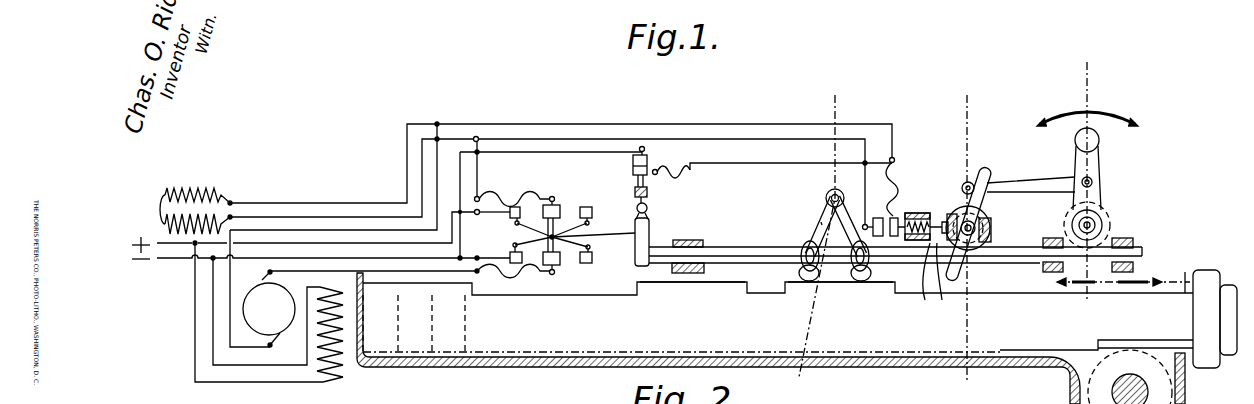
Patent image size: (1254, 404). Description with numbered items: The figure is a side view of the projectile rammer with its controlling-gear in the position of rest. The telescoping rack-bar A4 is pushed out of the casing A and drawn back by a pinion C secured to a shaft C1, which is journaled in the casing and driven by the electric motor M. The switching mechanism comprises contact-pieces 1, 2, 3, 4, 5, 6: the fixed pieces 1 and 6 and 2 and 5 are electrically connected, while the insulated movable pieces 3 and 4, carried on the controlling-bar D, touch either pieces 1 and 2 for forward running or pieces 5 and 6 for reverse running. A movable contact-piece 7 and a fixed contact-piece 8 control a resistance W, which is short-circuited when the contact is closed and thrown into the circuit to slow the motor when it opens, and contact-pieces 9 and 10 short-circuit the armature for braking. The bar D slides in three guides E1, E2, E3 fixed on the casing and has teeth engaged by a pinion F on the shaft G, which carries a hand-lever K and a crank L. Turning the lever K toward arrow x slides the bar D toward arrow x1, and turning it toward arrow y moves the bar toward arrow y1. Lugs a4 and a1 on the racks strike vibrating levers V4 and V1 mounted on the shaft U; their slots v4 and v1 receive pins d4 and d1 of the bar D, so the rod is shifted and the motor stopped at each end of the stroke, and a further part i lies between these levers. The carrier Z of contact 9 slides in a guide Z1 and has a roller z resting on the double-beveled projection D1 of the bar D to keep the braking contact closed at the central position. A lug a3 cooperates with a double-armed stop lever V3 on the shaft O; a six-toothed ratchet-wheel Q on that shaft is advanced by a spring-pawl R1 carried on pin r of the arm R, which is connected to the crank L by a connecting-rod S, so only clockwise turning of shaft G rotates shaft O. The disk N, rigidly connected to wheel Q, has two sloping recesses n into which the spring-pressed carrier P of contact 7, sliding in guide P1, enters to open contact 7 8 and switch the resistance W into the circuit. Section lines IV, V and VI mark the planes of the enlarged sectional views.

The resistance W is at (203, 187).
The electric motor M is at (269, 308).
The contact-piece 1 is at (509, 216).
The contact-piece 2 is at (509, 255).
The contact-piece 3 is at (556, 210).
The contact-piece 4 is at (556, 266).
The contact-piece 5 is at (590, 210).
The contact-piece 6 is at (590, 264).
The movable contact-piece 7 is at (897, 217).
The fixed contact-piece 8 is at (880, 217).
The movable contact-piece 9 is at (633, 172).
The contact-piece 10 is at (633, 161).
The roller z is at (636, 209).
The carrier Z is at (662, 167).
The guide Z1 is at (648, 192).
The projection D1 is at (650, 238).
The controlling-bar D is at (732, 255).
The guide E1 is at (694, 240).
The guide E2 is at (1046, 237).
The guide E3 is at (1135, 241).
The shaft U is at (826, 198).
The vibrating lever V1 is at (812, 225).
The vibrating lever V4 is at (850, 212).
The link i is at (821, 230).
The slot v1 is at (800, 270).
The slot v4 is at (871, 272).
The pin d1 is at (813, 283).
The pin d4 is at (860, 283).
The lug a1 is at (788, 294).
The lug a3 is at (672, 293).
The lug a4 is at (381, 294).
The casing A is at (500, 367).
The rack-bar A4 is at (866, 367).
The recess n is at (950, 212).
The shaft O is at (980, 250).
The shifting ratchet-wheel Q is at (984, 247).
The stop lever V3 is at (983, 170).
The pin r is at (967, 181).
The arm R is at (962, 190).
The spring-pawl R1 is at (987, 217).
The disk N is at (990, 247).
The carrier P is at (918, 282).
The guide P1 is at (942, 282).
The connecting-rod S is at (1003, 181).
The hand-lever K is at (1080, 165).
The crank L is at (1095, 186).
The shaft G is at (1097, 215).
The pinion F is at (1111, 224).
The pinion C is at (1187, 397).
The shaft C1 is at (1136, 374).
The arrow x is at (1089, 107).
The arrow y is at (1046, 109).
The arrow x1 is at (1112, 283).
The arrow y1 is at (1149, 277).
The section line IV is at (1088, 182).
The section line V is at (965, 238).
The section line VI is at (817, 239).